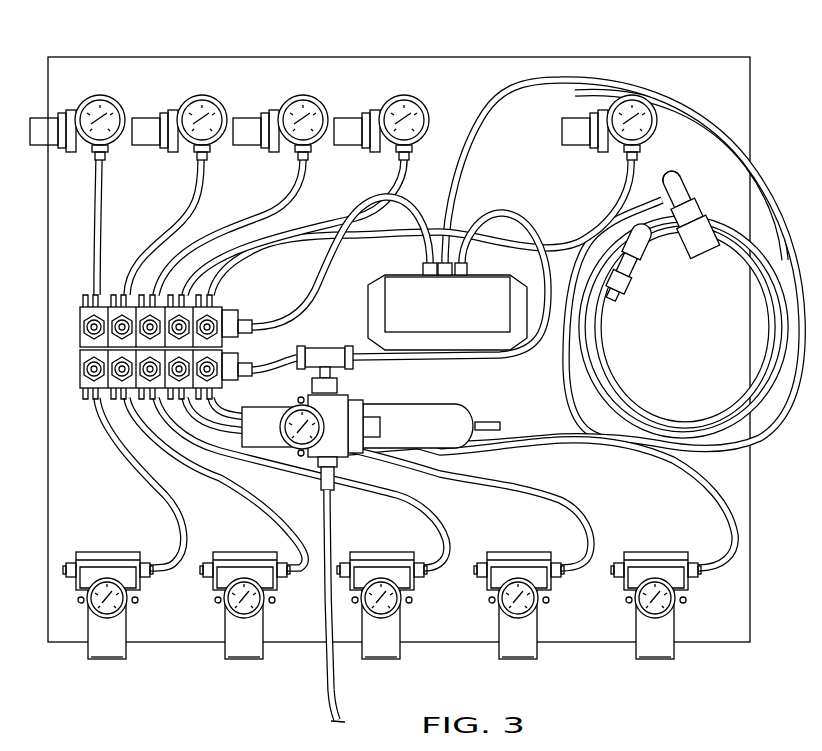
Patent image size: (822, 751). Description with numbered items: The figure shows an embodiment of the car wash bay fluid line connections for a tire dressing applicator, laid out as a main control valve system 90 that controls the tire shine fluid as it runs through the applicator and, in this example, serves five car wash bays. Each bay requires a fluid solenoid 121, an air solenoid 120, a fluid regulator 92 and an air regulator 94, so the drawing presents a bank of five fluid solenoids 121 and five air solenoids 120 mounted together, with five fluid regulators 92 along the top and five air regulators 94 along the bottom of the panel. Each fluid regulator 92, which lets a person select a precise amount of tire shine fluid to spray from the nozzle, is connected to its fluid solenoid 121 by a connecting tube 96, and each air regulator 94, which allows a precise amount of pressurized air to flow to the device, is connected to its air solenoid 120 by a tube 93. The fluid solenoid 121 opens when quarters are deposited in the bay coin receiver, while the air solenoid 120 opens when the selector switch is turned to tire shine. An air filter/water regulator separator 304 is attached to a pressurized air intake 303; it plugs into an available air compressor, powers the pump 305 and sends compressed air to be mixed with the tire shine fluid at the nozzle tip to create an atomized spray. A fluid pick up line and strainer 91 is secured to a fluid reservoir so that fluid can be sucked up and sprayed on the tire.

The control valve system 90 is at (723, 95).
The fluid pick up line and strainer 91 is at (500, 88).
The fluid regulator 92 is at (352, 128).
The tube 93 is at (290, 545).
The air regulator 94 is at (245, 655).
The connecting tube 96 is at (100, 210).
The air solenoid 120 is at (66, 392).
The fluid solenoid 121 is at (82, 330).
The pressurized air intake 303 is at (330, 697).
The air filter/water regulator separator 304 is at (463, 425).
The pump 305 is at (483, 302).